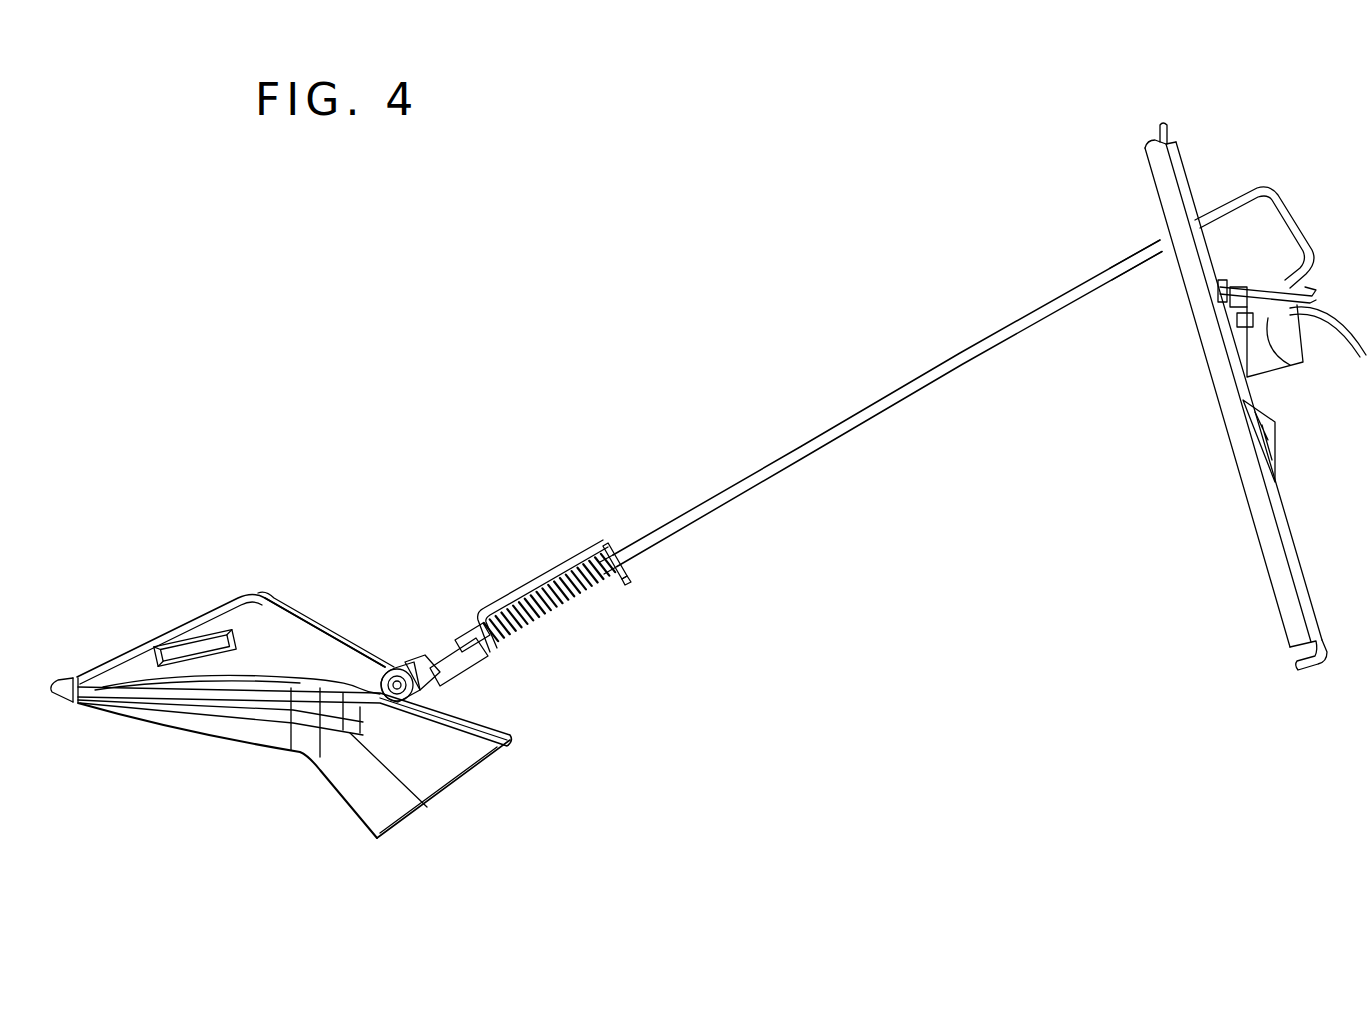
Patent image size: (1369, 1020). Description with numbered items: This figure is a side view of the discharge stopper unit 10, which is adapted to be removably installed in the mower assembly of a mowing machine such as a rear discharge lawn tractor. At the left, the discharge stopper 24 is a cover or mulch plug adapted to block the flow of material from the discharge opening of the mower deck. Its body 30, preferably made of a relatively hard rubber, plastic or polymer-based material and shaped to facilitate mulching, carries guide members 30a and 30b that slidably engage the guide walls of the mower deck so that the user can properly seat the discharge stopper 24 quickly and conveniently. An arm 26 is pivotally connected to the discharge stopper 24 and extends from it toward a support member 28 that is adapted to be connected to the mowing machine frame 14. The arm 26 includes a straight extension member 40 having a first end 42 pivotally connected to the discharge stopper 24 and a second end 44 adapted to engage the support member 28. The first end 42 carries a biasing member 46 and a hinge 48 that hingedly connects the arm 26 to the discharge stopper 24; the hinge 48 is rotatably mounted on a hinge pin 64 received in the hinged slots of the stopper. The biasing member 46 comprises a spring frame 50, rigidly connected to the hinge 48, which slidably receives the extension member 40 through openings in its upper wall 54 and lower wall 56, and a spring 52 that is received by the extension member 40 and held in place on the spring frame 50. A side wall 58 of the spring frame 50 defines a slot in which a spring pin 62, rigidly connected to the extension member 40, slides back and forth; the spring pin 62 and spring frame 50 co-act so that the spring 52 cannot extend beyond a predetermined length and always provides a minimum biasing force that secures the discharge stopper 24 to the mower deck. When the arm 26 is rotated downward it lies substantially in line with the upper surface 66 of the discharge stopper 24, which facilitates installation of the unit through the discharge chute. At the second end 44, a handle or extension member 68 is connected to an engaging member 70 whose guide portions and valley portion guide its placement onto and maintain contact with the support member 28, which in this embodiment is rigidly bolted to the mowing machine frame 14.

The discharge stopper unit 10 is at (600, 204).
The mowing machine frame 14 is at (1180, 160).
The discharge stopper 24 is at (208, 545).
The arm 26 is at (986, 410).
The support member 28 is at (1290, 372).
The body 30 is at (283, 592).
The guide member 30a is at (196, 628).
The guide member 30b is at (62, 678).
The extension member 40 is at (822, 428).
The first end 42 is at (630, 544).
The second end 44 is at (1132, 258).
The biasing member 46 is at (545, 560).
The hinge 48 is at (426, 666).
The spring frame 50 is at (498, 603).
The spring 52 is at (520, 627).
The upper wall 54 is at (636, 572).
The lower wall 56 is at (462, 640).
The side wall 58 is at (515, 588).
The spring pin 62 is at (585, 542).
The hinge pin 64 is at (440, 690).
The upper surface 66 is at (322, 598).
The extension member 68 is at (1292, 216).
The engaging member 70 is at (1282, 280).